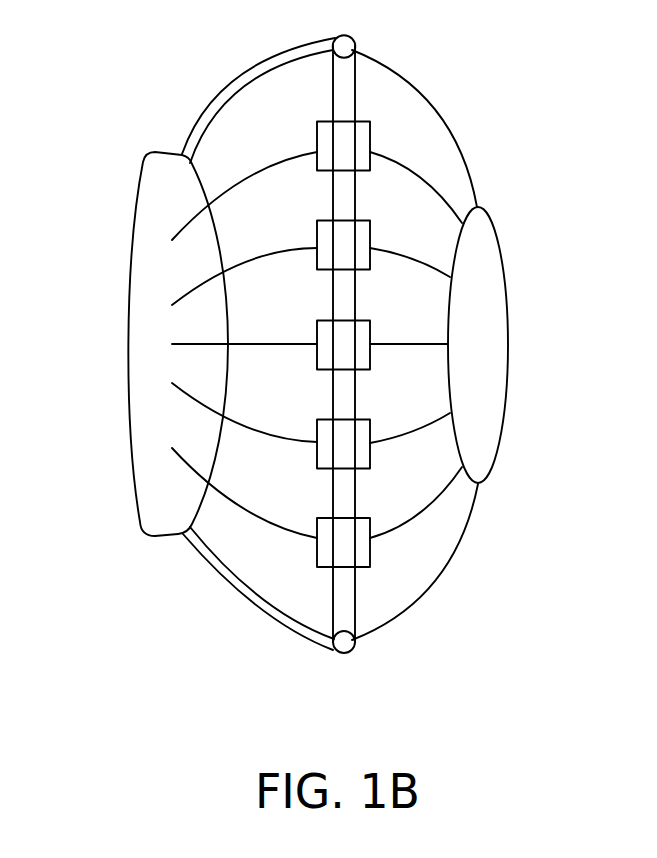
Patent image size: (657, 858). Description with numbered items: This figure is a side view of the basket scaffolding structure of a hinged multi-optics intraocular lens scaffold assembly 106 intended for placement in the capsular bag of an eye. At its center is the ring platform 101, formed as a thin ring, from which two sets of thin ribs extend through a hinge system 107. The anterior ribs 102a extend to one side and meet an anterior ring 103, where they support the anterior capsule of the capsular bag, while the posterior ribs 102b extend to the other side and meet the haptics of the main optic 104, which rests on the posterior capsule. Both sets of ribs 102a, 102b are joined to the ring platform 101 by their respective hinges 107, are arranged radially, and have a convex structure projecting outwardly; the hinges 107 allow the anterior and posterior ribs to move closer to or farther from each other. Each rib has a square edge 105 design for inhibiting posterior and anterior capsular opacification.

The ring platform 101 is at (343, 80).
The anterior ribs 102a is at (423, 177).
The posterior ribs 102b is at (250, 173).
The anterior ring 103 is at (508, 345).
The main optic 104 is at (128, 345).
The square edge 105 is at (190, 527).
The IOL scaffold assembly 106 is at (272, 108).
The hinge system 107 is at (370, 555).